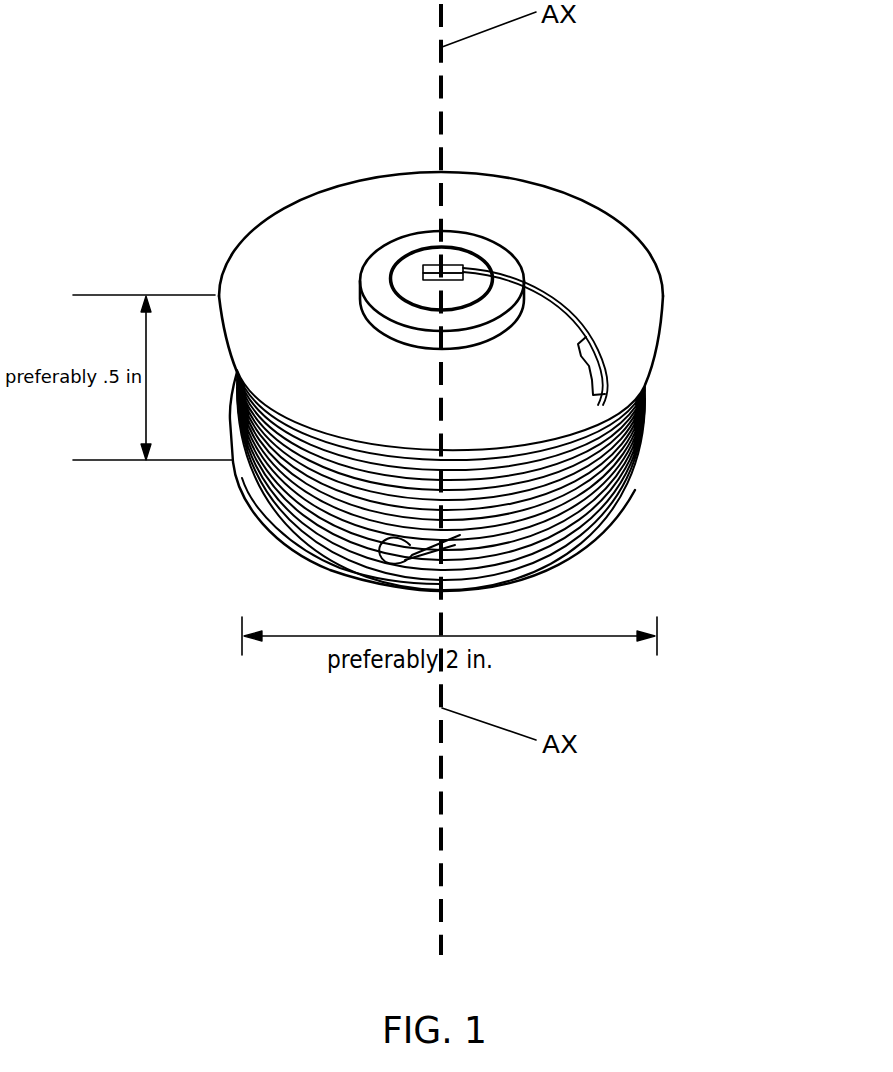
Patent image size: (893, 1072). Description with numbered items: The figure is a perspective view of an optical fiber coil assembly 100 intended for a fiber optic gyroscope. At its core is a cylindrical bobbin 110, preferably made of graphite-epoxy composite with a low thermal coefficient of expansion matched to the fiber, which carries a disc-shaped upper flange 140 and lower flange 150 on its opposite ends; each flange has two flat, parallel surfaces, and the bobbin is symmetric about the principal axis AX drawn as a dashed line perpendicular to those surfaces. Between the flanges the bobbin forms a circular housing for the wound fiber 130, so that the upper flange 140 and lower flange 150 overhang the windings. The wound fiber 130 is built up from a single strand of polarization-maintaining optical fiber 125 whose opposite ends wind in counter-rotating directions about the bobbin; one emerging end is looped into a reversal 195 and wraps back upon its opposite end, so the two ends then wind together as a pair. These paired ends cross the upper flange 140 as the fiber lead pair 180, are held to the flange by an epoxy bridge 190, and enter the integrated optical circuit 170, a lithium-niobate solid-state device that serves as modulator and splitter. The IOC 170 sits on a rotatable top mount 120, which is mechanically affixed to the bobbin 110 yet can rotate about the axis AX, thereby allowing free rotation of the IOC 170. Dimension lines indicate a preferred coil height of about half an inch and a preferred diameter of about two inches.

The optical fiber coil assembly 100 is at (321, 112).
The bobbin 110 is at (303, 544).
The rotatable top mount 120 is at (507, 262).
The optical fiber 125 is at (668, 428).
The wound fiber 130 is at (645, 400).
The upper flange 140 is at (220, 296).
The lower flange 150 is at (233, 462).
The integrated optical circuit (IOC) 170 is at (444, 265).
The fiber lead pair 180 is at (586, 340).
The bridge 190 is at (600, 385).
The reversal 195 is at (388, 540).